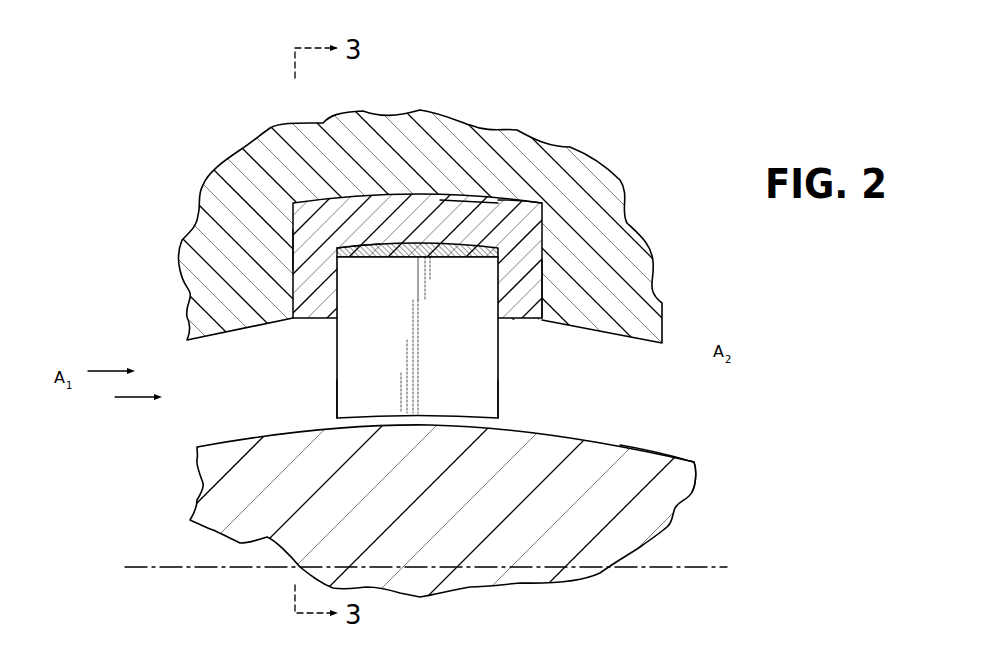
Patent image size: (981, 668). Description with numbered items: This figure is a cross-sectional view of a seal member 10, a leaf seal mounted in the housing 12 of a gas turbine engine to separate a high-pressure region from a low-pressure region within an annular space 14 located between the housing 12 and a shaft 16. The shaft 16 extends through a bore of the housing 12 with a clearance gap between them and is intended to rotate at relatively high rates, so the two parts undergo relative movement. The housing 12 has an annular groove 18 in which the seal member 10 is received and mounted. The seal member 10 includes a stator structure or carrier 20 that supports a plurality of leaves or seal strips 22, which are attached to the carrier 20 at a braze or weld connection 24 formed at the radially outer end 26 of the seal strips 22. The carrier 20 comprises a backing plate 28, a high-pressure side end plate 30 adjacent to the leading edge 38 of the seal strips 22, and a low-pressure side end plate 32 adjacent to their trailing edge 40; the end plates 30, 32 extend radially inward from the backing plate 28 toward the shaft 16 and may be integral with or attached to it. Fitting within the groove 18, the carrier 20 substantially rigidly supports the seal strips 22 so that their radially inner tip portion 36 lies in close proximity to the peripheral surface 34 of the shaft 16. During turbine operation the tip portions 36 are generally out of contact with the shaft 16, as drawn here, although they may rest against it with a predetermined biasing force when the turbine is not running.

The seal member 10 is at (556, 342).
The housing 12 is at (622, 178).
The annular space 14 is at (247, 414).
The shaft 16 is at (688, 455).
The annular groove 18 is at (462, 212).
The carrier 20 is at (522, 198).
The seal strips 22 is at (336, 353).
The braze or weld connection 24 is at (398, 245).
The radially outer end 26 is at (362, 246).
The backing plate 28 is at (470, 218).
The high-pressure side end plate 30 is at (302, 248).
The low-pressure side end plate 32 is at (542, 283).
The peripheral surface 34 is at (654, 447).
The tip portion 36 is at (419, 418).
The leading edge 38 is at (337, 390).
The trailing edge 40 is at (498, 397).